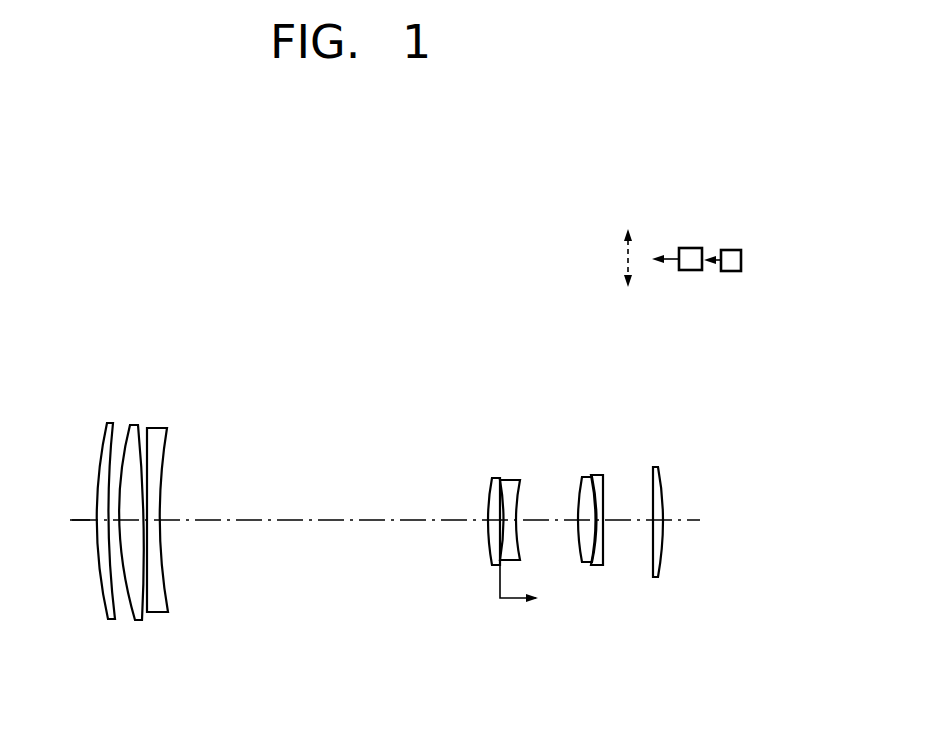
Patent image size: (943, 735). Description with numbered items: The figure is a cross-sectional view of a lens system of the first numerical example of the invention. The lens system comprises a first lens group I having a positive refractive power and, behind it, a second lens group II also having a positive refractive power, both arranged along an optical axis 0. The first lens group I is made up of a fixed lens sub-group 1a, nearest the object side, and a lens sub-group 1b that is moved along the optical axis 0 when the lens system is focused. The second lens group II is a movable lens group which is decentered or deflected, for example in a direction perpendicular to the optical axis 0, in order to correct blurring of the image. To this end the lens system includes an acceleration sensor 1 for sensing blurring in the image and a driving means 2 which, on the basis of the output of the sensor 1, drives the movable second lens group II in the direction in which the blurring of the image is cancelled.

The optical axis 0 is at (67, 523).
The acceleration sensor 1 is at (735, 250).
The driving means 2 is at (691, 248).
The first lens group I is at (68, 348).
The fixed lens sub-group 1a is at (184, 407).
The lens sub-group 1b is at (537, 453).
The second lens group II is at (697, 350).